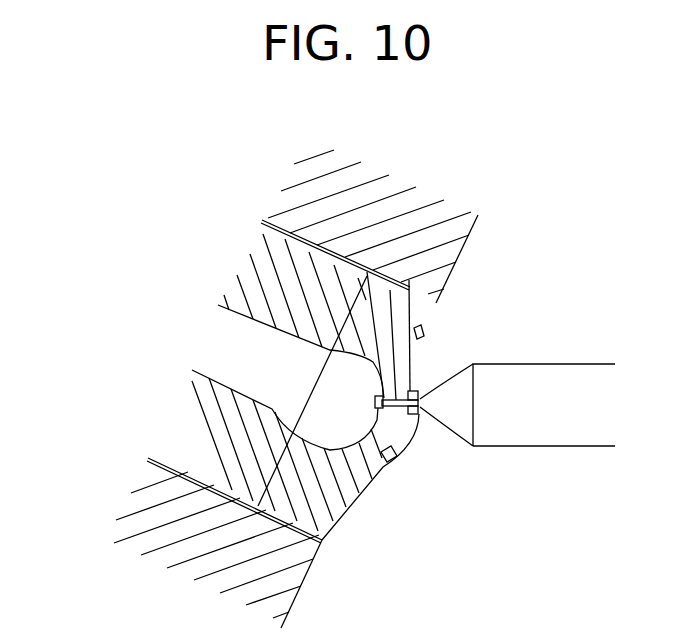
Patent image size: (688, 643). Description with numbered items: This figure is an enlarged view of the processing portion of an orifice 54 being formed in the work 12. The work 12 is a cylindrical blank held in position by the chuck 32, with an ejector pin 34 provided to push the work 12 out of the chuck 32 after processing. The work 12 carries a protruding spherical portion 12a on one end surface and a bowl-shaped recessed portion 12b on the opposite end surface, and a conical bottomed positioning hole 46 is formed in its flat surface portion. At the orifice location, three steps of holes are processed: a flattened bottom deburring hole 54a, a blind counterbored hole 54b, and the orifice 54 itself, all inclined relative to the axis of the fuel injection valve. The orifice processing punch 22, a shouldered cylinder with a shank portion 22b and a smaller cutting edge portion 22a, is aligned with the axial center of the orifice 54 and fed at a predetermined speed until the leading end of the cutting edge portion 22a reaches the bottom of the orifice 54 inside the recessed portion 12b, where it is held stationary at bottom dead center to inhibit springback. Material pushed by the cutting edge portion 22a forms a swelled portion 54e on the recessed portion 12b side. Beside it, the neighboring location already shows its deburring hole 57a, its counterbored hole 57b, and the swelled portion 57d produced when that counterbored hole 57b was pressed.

The work 12 is at (318, 523).
The spherical portion 12a is at (410, 437).
The recessed portion 12b is at (326, 392).
The orifice processing punch 22 is at (570, 380).
The cutting edge portion 22a is at (390, 290).
The shank portion 22b is at (590, 430).
The chuck 32 is at (157, 530).
The ejector pin 34 is at (208, 460).
The positioning hole 46 is at (430, 322).
The orifice 54 is at (367, 272).
The deburring hole 54a is at (428, 394).
The counterbored hole 54b is at (415, 325).
The swelled portion 54e is at (375, 398).
The deburring hole 57a is at (397, 463).
The counterbored hole 57b is at (386, 462).
The swelled portion 57d is at (370, 423).